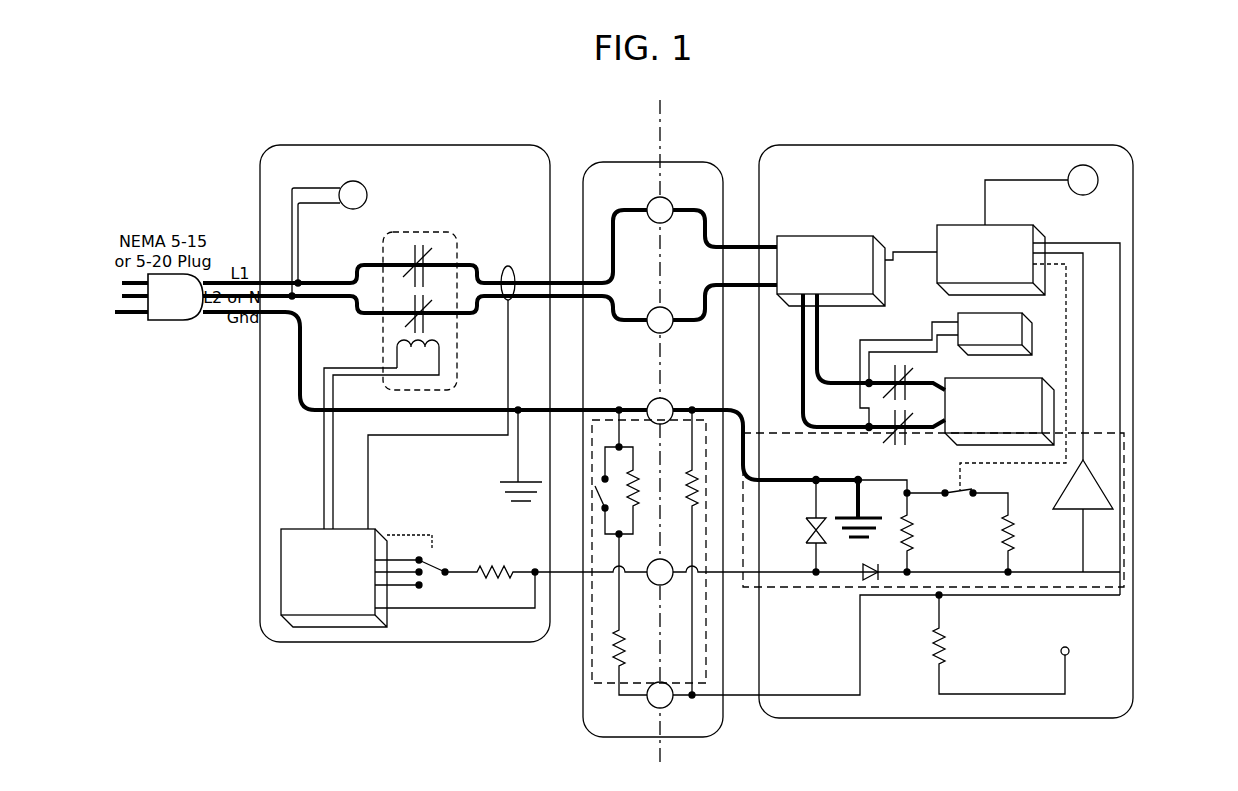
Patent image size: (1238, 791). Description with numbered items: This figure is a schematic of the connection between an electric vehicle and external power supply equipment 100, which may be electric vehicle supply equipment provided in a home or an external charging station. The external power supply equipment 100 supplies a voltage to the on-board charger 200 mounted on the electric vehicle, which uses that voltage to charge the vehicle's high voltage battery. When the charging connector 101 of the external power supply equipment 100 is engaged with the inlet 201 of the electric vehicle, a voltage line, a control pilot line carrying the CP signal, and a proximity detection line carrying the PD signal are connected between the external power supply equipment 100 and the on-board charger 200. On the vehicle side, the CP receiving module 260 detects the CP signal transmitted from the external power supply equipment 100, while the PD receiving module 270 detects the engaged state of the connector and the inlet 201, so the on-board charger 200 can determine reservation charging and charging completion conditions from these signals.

The external power supply equipment 100 is at (335, 132).
The charging connector 101 is at (628, 162).
The inlet 201 is at (687, 162).
The on-board charger 200 is at (987, 131).
The CP receiving module 260 is at (1133, 520).
The PD receiving module 270 is at (592, 668).